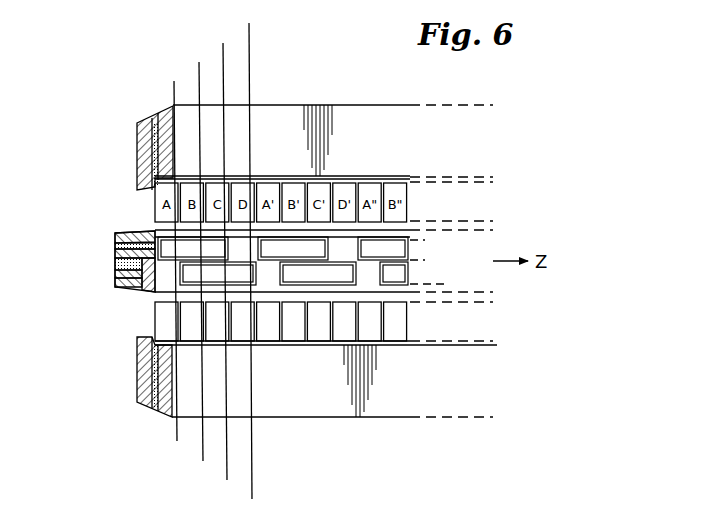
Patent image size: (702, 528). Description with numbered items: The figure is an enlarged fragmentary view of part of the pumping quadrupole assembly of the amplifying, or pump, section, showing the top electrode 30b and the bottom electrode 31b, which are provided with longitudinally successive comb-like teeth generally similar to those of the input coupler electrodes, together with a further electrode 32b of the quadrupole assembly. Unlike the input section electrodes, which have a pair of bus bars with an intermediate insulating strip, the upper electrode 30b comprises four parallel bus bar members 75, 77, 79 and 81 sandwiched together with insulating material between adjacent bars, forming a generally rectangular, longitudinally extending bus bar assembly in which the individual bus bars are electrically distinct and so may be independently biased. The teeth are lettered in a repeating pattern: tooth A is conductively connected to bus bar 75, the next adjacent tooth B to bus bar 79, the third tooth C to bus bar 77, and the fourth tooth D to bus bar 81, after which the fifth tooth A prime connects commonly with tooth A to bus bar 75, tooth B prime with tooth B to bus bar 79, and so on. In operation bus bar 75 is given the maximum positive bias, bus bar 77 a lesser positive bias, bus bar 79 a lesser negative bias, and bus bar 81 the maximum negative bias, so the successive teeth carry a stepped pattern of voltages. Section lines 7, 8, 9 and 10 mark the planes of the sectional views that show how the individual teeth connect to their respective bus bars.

The section line 7- 7 is at (174, 81).
The section line 8- 8 is at (199, 62).
The section line 9- 9 is at (223, 43).
The section line 10- 10 is at (249, 23).
The top electrode 30b is at (350, 105).
The bottom electrode 31b is at (387, 418).
The pumping quadrupole assembly electrode 32b is at (247, 239).
The bus bar 75 is at (115, 286).
The bus bar 77 is at (115, 272).
The bus bar 79 is at (115, 253).
The bus bar 81 is at (115, 237).